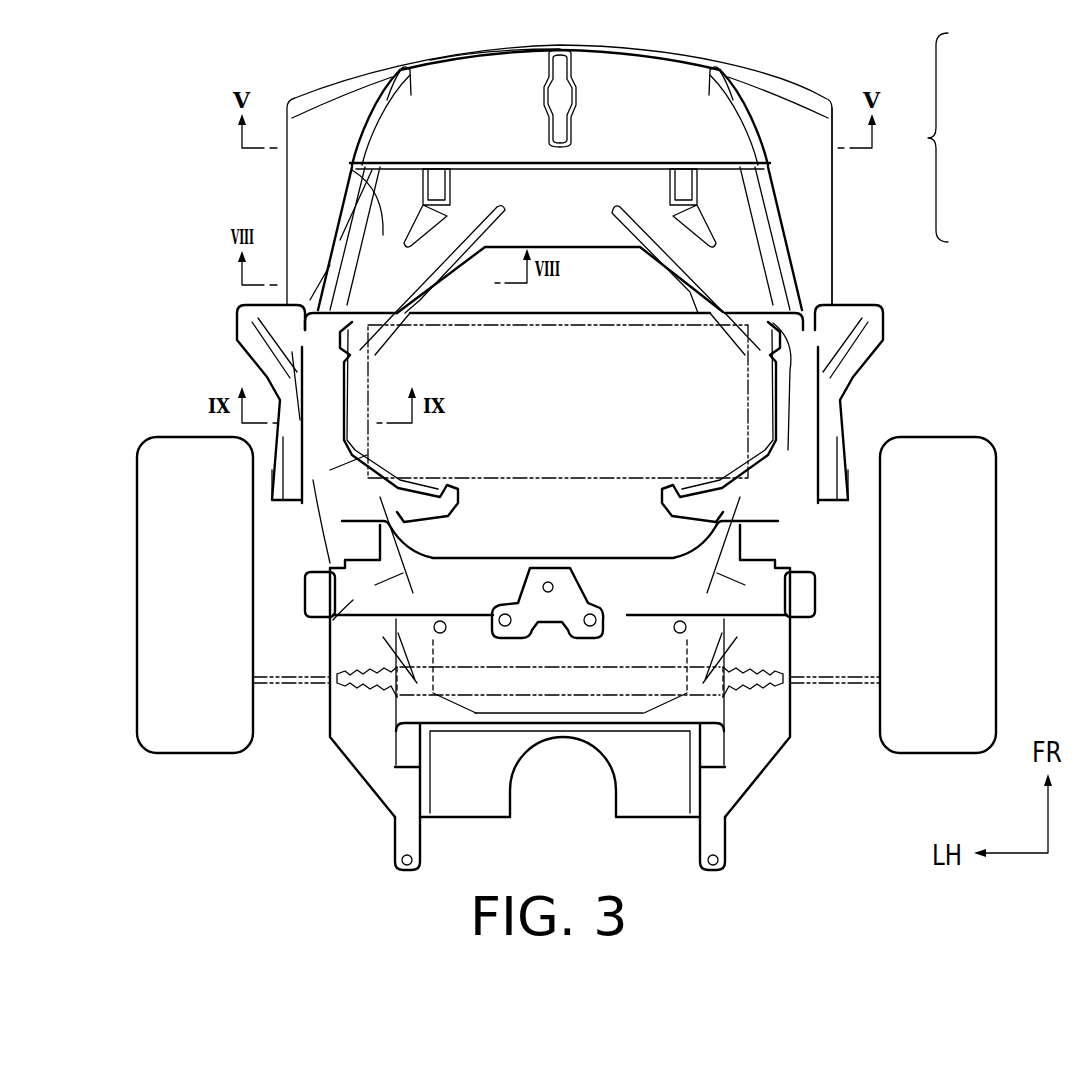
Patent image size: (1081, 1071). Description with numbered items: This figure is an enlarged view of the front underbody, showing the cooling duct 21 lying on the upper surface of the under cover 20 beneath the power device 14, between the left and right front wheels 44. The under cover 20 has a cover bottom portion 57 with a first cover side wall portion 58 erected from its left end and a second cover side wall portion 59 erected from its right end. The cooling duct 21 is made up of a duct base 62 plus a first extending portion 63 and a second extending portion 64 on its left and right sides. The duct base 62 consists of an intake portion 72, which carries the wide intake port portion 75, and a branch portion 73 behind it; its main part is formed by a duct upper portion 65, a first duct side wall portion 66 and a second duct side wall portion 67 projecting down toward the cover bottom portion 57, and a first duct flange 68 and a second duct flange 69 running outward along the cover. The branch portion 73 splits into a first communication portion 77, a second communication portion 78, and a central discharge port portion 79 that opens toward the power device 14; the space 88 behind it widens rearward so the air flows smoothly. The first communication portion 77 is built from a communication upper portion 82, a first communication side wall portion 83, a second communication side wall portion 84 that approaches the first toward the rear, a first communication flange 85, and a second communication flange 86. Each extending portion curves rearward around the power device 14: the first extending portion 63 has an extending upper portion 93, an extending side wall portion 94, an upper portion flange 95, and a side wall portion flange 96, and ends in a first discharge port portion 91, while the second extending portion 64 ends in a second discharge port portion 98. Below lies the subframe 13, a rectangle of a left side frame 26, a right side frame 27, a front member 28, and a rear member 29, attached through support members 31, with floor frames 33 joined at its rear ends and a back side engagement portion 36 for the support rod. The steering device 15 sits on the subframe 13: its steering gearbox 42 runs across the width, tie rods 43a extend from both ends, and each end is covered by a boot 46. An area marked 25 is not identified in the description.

The under cover 20 is at (297, 95).
The cooling duct 21 is at (471, 54).
The intake port portion 75 is at (527, 50).
The duct upper portion 65 is at (597, 83).
The first duct side wall portion 66 is at (383, 120).
The first duct flange 68 is at (390, 98).
The second duct flange 69 is at (735, 123).
The second duct side wall portion 67 is at (757, 124).
The intake portion 72 is at (818, 115).
The branch portion 73 is at (795, 233).
The duct base 62 is at (958, 137).
The first communication portion 77 is at (323, 251).
The second communication portion 78 is at (755, 275).
The communication upper portion 82 is at (383, 233).
The first communication side wall portion 83 is at (350, 237).
The first communication flange 85 is at (330, 265).
The space 88 is at (580, 306).
The central discharge port portion 79 is at (590, 248).
The second communication side wall portion 84 is at (462, 262).
The second communication flange 86 is at (440, 287).
The battery / power unit space 25 is at (680, 404).
The first extending portion 63 is at (300, 395).
The second extending portion 64 is at (800, 410).
The upper portion flange 95 is at (313, 404).
The power device 14 is at (367, 455).
The first cover side wall portion 58 is at (277, 483).
The second cover side wall portion 59 is at (840, 490).
The front wheels 44 is at (137, 627).
The extending side wall portion 94 is at (353, 400).
The side wall portion flange 96 is at (383, 457).
The cover bottom portion 57 is at (707, 447).
The second discharge port portion 98 is at (722, 540).
The first discharge port portion 91 is at (343, 555).
The extending upper portion 93 is at (333, 463).
The front member 28 is at (483, 583).
The support members 31 is at (352, 600).
The left side frame 26 is at (440, 627).
The right side frame 27 is at (680, 627).
The back side engagement portion 36 is at (533, 612).
The subframe 13 is at (592, 693).
The tie rods 43a is at (300, 683).
The boot 46 is at (370, 697).
The steering gearbox 42 is at (648, 697).
The rear member 29 is at (513, 720).
The steering device 15 is at (543, 733).
The floor frames 33 is at (400, 837).